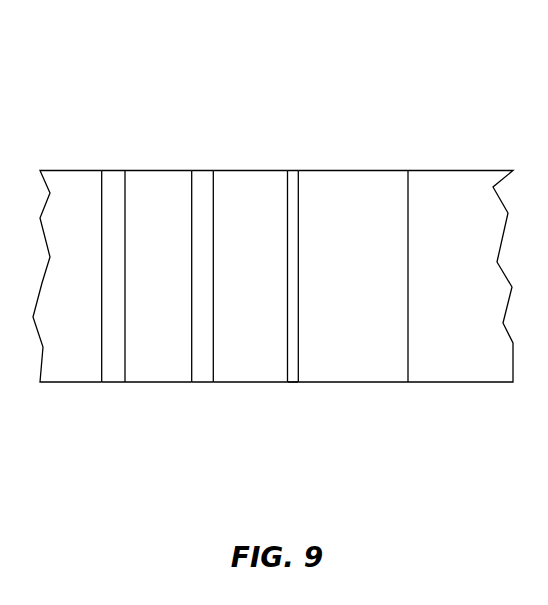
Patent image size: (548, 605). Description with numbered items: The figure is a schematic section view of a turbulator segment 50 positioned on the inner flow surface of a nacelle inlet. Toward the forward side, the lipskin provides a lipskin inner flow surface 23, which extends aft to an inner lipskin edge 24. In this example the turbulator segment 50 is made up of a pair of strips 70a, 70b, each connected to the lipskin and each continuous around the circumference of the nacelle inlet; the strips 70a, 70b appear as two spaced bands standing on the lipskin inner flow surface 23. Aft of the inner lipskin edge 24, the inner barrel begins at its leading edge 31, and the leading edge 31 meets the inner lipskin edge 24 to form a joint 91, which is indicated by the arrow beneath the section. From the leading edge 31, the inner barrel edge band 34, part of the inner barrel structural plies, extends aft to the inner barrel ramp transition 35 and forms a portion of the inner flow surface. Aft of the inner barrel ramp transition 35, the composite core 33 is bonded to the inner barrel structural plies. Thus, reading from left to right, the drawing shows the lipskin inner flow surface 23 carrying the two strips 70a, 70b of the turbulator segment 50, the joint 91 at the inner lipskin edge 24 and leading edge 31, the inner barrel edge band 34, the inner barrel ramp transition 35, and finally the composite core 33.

The turbulator segment 50 is at (267, 253).
The lipskin inner flow surface 23 is at (88, 358).
The strip 70a is at (113, 183).
The strip 70b is at (202, 183).
The inner lipskin edge 24 is at (287, 212).
The leading edge 31 is at (298, 183).
The inner barrel edge band 34 is at (348, 362).
The inner barrel ramp transition 35 is at (407, 200).
The composite core 33 is at (463, 355).
The joint 91 is at (289, 399).